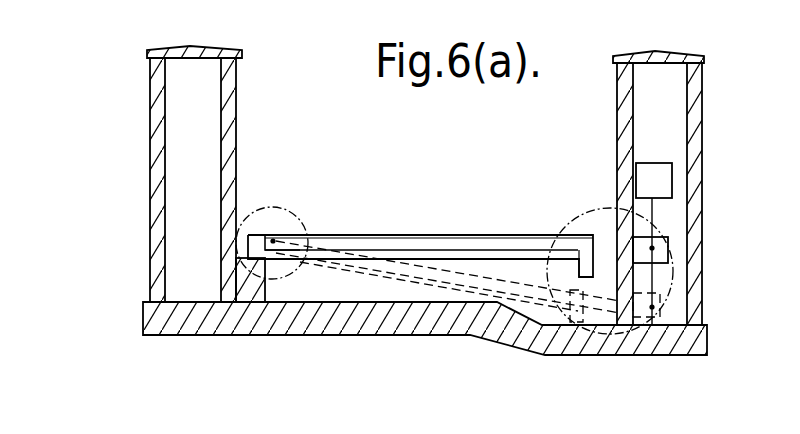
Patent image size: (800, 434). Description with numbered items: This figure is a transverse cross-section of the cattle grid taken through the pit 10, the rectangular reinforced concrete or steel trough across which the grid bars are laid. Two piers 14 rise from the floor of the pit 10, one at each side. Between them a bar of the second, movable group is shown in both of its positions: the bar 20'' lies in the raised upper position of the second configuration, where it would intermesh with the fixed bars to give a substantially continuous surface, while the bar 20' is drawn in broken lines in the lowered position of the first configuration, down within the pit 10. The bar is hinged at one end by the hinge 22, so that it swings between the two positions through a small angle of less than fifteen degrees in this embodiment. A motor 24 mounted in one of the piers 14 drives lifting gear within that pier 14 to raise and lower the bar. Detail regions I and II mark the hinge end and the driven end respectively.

The pit 10 is at (387, 336).
The pier 14 is at (150, 121).
The bar of second group in upper position 20'' is at (458, 229).
The bar of second group in lower position 20' is at (468, 313).
The hinge 22 is at (273, 241).
The motor 24 is at (672, 176).
The detail region I is at (303, 196).
The detail region II is at (590, 210).